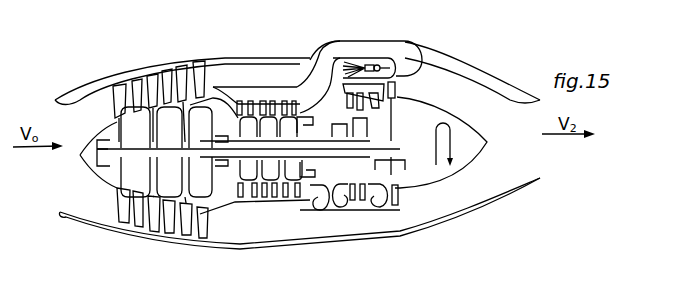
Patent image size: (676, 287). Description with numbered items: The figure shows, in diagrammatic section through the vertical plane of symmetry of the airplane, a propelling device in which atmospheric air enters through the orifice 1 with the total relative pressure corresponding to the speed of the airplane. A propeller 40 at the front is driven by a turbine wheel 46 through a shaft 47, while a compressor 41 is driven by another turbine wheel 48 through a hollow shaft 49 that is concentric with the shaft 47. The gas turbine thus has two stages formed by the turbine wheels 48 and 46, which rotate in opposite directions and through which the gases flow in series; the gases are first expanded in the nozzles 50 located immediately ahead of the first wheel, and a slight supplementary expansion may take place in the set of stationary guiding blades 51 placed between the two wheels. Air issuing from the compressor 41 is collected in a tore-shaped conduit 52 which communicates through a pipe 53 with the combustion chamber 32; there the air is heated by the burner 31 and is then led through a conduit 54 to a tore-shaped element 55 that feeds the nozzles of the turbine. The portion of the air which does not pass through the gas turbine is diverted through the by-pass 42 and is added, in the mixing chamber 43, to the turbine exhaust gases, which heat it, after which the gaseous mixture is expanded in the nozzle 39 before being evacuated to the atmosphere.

The orifice 1 is at (67, 171).
The burner 31 is at (377, 65).
The combustion chamber 32 is at (348, 64).
The nozzle 39 is at (526, 139).
The propeller 40 is at (152, 97).
The compressor 41 is at (238, 100).
The by-pass 42 is at (253, 71).
The mixing chamber 43 is at (422, 82).
The turbine wheel 46 is at (400, 196).
The shaft 47 is at (194, 154).
The turbine wheel 48 is at (363, 196).
The hollow shaft 49 is at (240, 162).
The nozzles 50 is at (353, 196).
The stationary guiding blades 51 is at (378, 196).
The tore-shaped conduit 52 is at (313, 196).
The pipe 53 is at (307, 107).
The conduit 54 is at (335, 95).
The tore-shaped element 55 is at (340, 196).